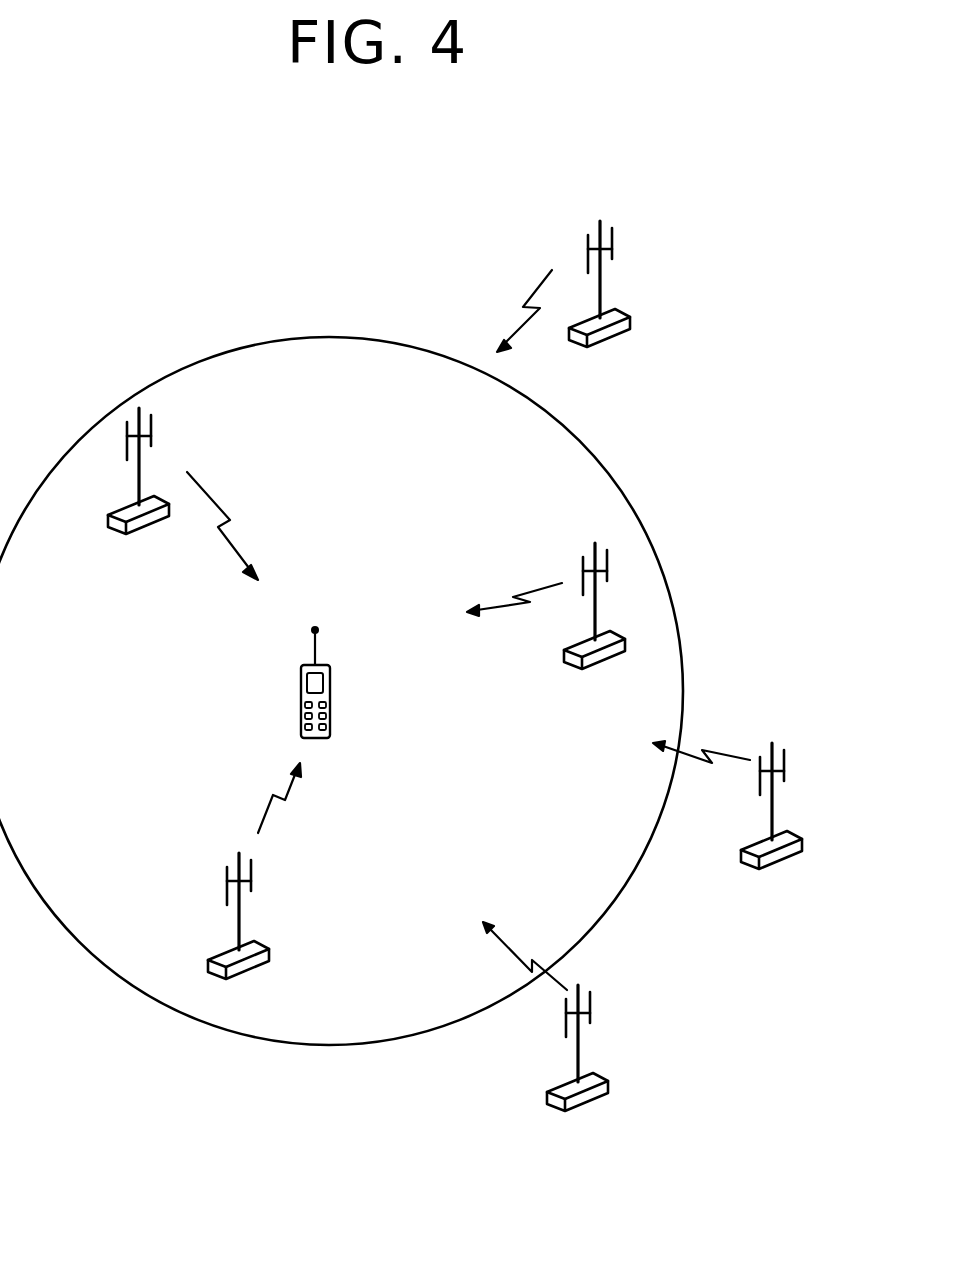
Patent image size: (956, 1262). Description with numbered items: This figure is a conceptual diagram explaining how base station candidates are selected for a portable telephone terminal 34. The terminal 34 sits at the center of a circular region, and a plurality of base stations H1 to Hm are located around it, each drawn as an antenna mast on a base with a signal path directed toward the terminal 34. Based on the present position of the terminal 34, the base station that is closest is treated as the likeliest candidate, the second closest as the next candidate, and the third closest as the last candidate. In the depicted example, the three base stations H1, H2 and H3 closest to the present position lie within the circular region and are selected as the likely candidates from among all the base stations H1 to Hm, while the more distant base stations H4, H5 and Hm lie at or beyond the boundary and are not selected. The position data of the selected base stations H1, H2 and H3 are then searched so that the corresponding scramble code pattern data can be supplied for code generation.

The portable telephone terminal 34 is at (332, 692).
The base station H1 is at (127, 482).
The base station H2 is at (237, 910).
The base station H3 is at (597, 612).
The base station H4 is at (602, 288).
The base station H5 is at (775, 810).
The base station Hm is at (580, 1047).